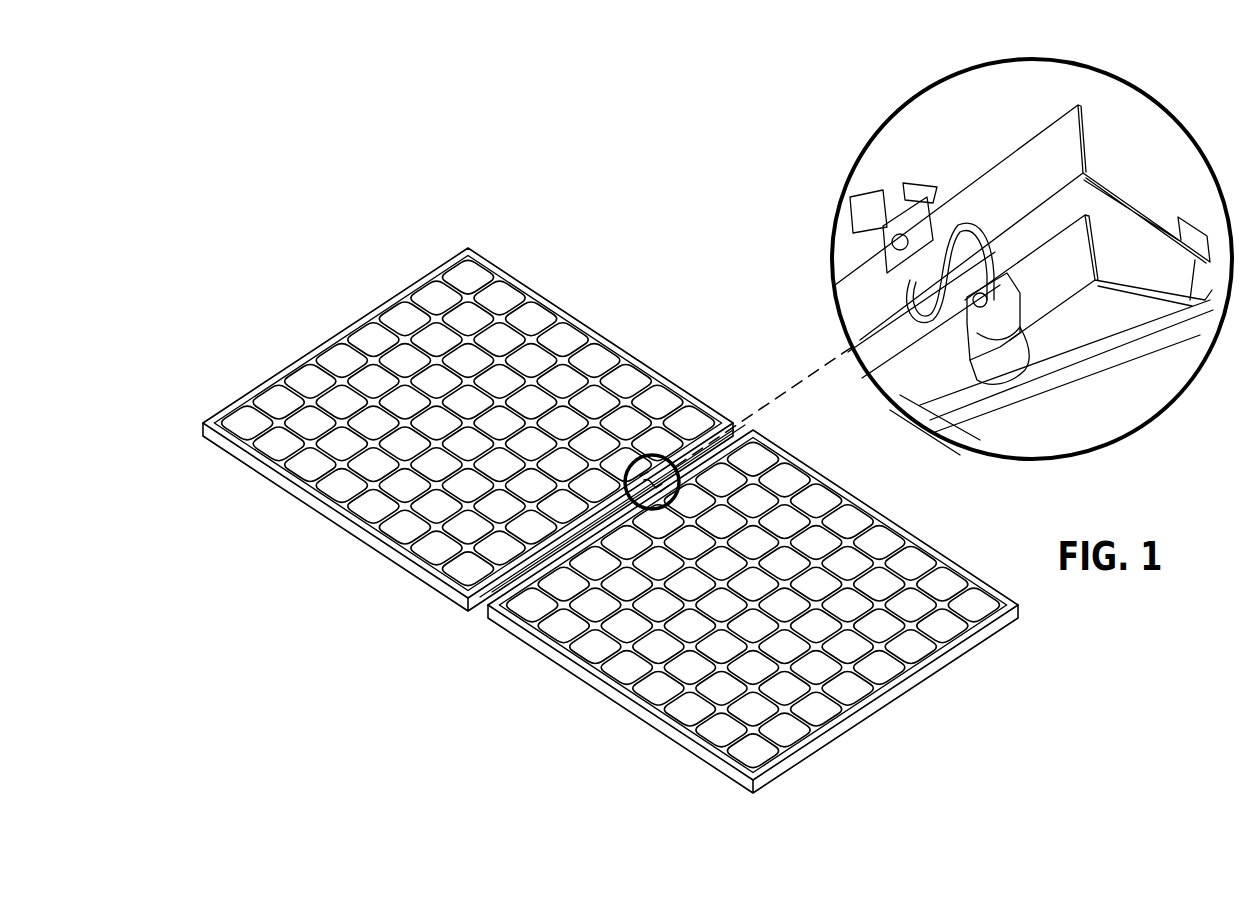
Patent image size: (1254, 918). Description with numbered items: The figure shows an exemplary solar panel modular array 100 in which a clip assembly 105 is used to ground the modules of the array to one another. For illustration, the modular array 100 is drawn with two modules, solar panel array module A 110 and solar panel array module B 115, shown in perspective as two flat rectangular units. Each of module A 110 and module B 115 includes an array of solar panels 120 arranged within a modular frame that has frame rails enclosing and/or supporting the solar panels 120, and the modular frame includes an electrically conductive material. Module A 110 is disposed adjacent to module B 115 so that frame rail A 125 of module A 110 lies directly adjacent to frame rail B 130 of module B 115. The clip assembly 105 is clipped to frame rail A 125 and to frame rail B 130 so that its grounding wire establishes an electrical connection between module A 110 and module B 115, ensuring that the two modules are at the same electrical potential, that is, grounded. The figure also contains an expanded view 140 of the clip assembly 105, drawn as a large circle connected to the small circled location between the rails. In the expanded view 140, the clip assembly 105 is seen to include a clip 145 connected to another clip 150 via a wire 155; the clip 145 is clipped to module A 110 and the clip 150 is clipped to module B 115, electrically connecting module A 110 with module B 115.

The solar panel modular array 100 is at (344, 260).
The clip assembly 105 is at (967, 126).
The solar panel array module A 110 is at (282, 496).
The solar panel array module B 115 is at (624, 718).
The solar panels 120 is at (517, 282).
The frame rail A 125 is at (466, 605).
The frame rail B 130 is at (490, 611).
The expanded view 140 is at (1173, 115).
The clip 145 is at (900, 190).
The clip 150 is at (1022, 282).
The wire 155 is at (980, 221).